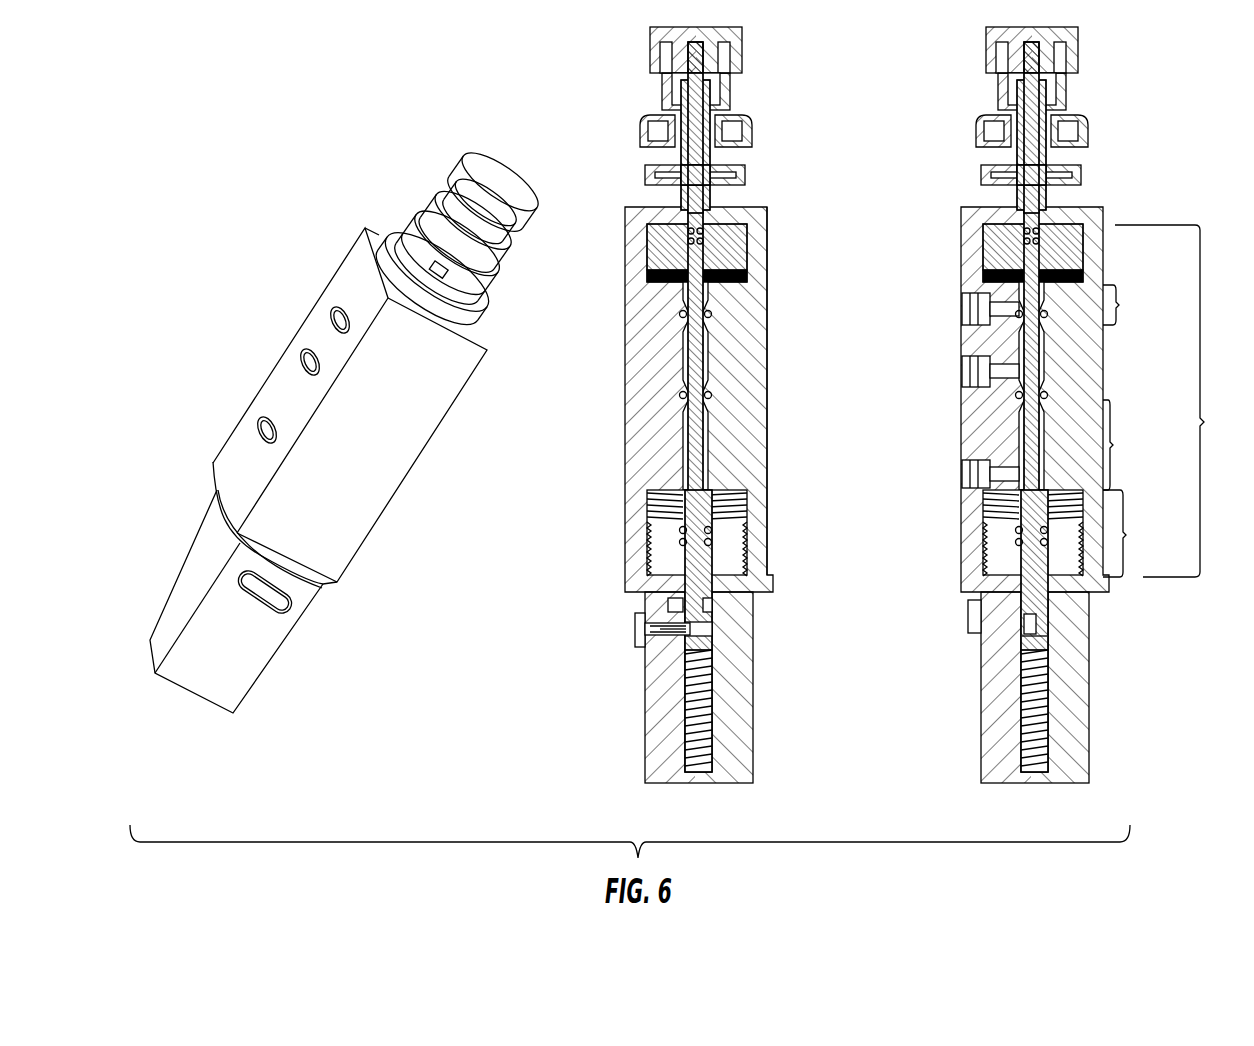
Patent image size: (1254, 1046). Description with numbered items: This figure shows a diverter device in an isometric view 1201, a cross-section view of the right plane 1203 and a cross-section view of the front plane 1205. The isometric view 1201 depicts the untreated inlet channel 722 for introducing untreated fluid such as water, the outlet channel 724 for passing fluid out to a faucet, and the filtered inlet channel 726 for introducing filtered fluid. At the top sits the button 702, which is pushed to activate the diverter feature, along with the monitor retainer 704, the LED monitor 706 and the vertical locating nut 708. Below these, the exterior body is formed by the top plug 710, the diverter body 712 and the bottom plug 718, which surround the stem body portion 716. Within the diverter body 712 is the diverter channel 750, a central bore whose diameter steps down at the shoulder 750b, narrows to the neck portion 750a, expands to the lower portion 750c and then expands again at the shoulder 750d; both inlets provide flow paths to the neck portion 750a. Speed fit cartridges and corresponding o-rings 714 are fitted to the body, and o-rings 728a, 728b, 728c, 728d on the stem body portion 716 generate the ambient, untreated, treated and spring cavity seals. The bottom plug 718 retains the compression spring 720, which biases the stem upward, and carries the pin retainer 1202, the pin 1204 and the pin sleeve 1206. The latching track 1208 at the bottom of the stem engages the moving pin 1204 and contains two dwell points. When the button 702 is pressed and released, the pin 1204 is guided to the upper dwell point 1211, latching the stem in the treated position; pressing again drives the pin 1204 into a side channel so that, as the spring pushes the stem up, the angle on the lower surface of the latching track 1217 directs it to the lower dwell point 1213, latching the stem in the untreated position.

The button 702 is at (748, 48).
The monitor retainer 704 is at (734, 104).
The LED monitor 706 is at (757, 134).
The vertical locating nut 708 is at (751, 173).
The top plug 710 is at (770, 213).
The diverter body 712 is at (771, 293).
The speed fit cartridges and corresponding o-rings 714 is at (953, 401).
The stem body portion 716 is at (724, 459).
The bottom plug 718 is at (757, 553).
The compression spring 720 is at (716, 695).
The untreated inlet channel 722 is at (304, 303).
The outlet channel 724 is at (273, 346).
The filtered inlet channel 726 is at (235, 415).
The o-ring 728a is at (686, 232).
The o-ring 728b is at (678, 313).
The o-ring 728c is at (678, 394).
The o-ring 728d is at (678, 530).
The diverter channel 750 is at (1182, 401).
The neck portion 750a is at (716, 355).
The shoulder 750b is at (1135, 305).
The lower portion 750c is at (1133, 445).
The shoulder 750d is at (1140, 533).
The isometric view 1201 is at (354, 456).
The pin retainer 1202 is at (611, 673).
The cross-section view of the right plane 1203 is at (687, 432).
The pin 1204 is at (676, 641).
The cross-section view of the front plane 1205 is at (1055, 431).
The pin sleeve 1206 is at (670, 650).
The latching track 1208 is at (666, 604).
The upper dwell point 1211 is at (716, 603).
The lower dwell point 1213 is at (717, 628).
The angle on the lower surface of the latching track 1217 is at (1092, 614).